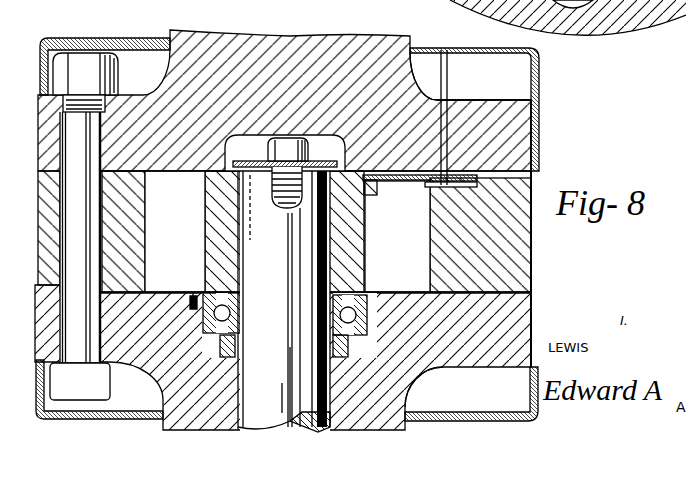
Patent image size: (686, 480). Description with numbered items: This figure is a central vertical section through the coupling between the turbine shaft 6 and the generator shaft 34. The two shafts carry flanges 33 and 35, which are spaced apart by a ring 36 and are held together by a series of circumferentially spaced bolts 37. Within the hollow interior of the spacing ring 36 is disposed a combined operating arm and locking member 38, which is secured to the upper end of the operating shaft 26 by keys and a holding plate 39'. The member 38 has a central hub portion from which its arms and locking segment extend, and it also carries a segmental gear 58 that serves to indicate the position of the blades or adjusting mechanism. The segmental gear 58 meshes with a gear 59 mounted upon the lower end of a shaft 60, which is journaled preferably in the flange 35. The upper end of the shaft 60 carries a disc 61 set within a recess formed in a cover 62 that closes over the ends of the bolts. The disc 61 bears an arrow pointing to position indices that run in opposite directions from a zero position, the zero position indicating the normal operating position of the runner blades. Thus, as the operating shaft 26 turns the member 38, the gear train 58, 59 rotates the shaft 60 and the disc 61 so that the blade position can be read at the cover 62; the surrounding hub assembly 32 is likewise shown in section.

The turbine shaft 6 is at (406, 402).
The operating shaft 26 is at (284, 301).
The hub 32 is at (543, 250).
The flange 33 is at (522, 321).
The generator shaft 34 is at (214, 9).
The flange 35 is at (532, 136).
The spacing ring 36 is at (526, 264).
The bolts 37 is at (87, 60).
The combined operating arm and locking member 38 is at (366, 259).
The holding plate 39' is at (285, 171).
The segmental gear 58 is at (397, 183).
The gear 59 is at (426, 187).
The shaft 60 is at (455, 83).
The disc 61 is at (443, 52).
The cover 62 is at (538, 73).